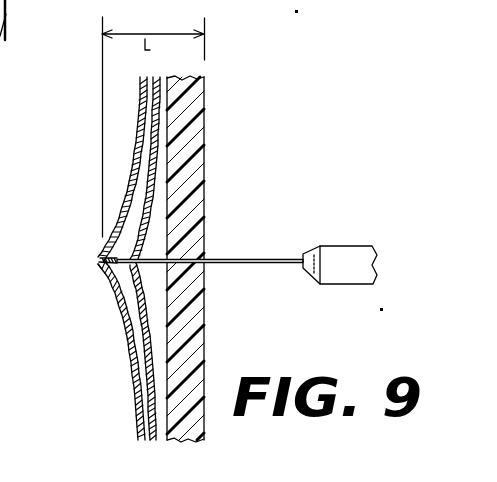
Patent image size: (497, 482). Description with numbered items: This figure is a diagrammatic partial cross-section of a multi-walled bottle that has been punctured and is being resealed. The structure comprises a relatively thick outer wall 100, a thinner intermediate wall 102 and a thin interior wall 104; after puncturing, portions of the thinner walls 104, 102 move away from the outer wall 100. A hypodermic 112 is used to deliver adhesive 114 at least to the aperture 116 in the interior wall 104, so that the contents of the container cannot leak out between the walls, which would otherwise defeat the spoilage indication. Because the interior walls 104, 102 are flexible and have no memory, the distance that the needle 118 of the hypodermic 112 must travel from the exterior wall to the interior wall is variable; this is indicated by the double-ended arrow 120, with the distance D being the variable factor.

The outer wall 100 is at (198, 139).
The intermediate wall 102 is at (150, 130).
The interior wall 104 is at (143, 100).
The hypodermic needle 112 is at (343, 246).
The adhesive 114 is at (102, 266).
The aperture 116 is at (100, 258).
The needle 118 is at (247, 264).
The double-ended arrow 120 is at (153, 126).